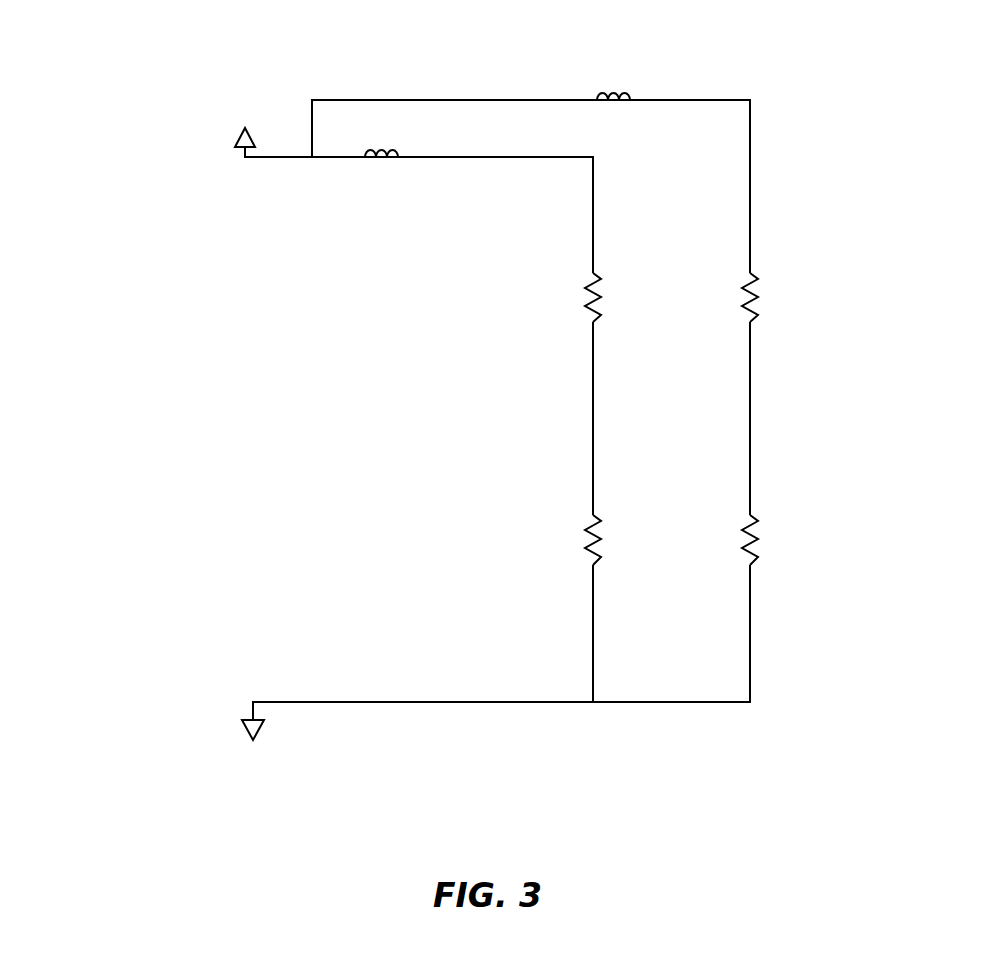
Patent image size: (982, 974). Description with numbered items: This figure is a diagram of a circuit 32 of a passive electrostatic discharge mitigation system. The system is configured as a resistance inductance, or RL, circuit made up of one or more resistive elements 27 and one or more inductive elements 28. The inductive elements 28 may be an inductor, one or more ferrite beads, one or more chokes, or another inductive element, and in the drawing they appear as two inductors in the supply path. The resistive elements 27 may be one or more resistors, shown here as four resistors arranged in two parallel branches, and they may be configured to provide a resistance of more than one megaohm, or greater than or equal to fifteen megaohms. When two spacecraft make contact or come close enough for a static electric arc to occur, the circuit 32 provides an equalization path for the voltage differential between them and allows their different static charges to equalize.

The resistive elements 27 is at (660, 330).
The inductive elements 28 is at (394, 110).
The circuit 32 is at (170, 430).